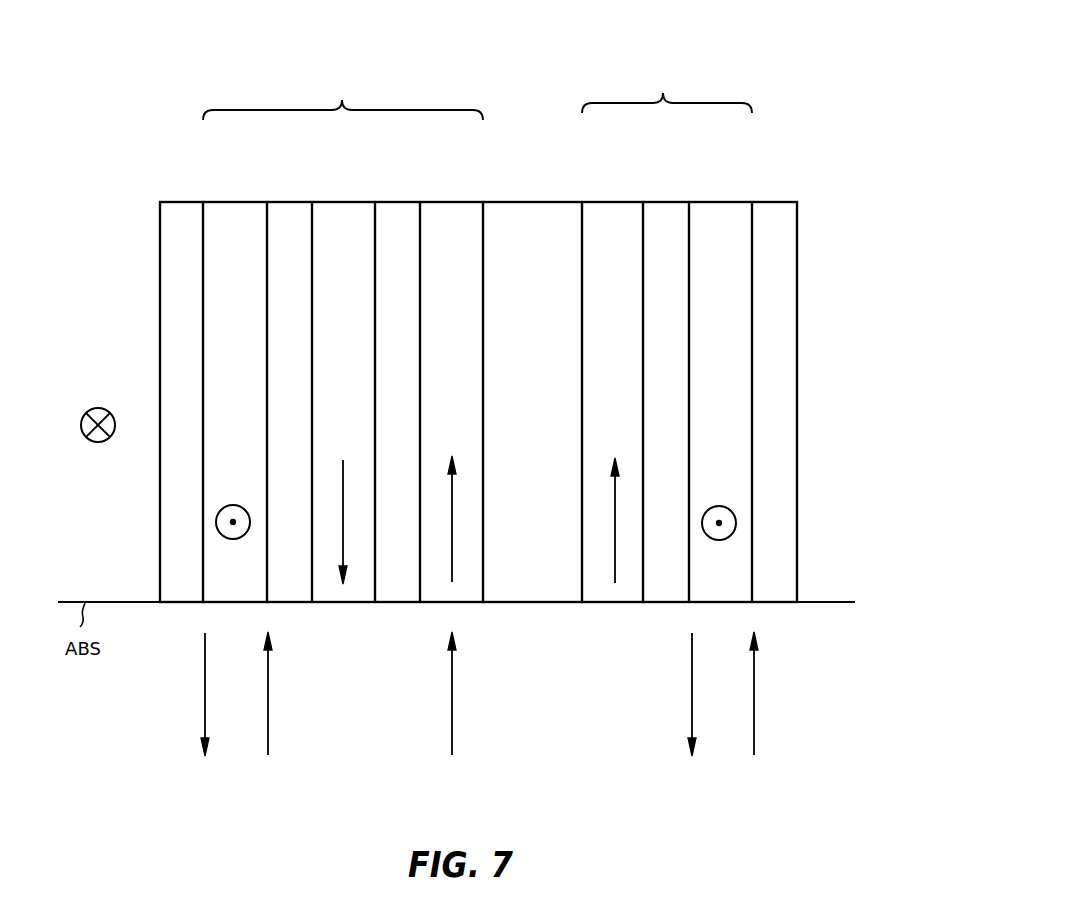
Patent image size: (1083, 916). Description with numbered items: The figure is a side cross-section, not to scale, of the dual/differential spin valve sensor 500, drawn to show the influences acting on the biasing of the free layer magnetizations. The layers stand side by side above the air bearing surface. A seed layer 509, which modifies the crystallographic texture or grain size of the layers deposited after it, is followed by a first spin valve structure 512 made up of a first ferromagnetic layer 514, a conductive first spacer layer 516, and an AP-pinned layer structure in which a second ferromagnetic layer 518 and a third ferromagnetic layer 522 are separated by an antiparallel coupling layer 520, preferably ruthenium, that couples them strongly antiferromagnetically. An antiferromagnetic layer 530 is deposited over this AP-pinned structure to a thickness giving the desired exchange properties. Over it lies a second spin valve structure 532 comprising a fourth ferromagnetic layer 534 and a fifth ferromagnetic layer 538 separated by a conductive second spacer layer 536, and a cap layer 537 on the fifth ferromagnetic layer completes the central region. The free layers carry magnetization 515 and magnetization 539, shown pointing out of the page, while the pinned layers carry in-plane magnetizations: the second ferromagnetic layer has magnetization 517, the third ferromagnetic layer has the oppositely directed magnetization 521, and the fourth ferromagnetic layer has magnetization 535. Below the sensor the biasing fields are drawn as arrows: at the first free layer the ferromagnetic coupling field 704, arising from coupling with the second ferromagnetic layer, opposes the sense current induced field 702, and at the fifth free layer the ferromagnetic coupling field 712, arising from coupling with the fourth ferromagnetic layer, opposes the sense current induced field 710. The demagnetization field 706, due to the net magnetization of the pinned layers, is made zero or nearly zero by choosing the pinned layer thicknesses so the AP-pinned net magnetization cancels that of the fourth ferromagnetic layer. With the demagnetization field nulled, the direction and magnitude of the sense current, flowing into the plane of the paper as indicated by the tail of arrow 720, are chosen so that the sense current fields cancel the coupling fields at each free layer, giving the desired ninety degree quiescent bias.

The dual/differential spin valve sensor 500 is at (848, 86).
The seed layer 509 is at (180, 200).
The first spin valve structure 512 is at (343, 96).
The first ferromagnetic layer (FM1) 514 is at (233, 200).
The magnetization of FM1 layer 515 is at (233, 505).
The first spacer layer 516 is at (285, 200).
The magnetization of FM2 517 is at (344, 481).
The second ferromagnetic layer (FM2) 518 is at (343, 200).
The antiparallel coupling (APC) layer 520 is at (399, 200).
The magnetization of FM3 521 is at (453, 491).
The third ferromagnetic layer (FM3) 522 is at (453, 200).
The antiferromagnetic (AFM) layer 530 is at (530, 200).
The second spin valve structure 532 is at (667, 90).
The fourth ferromagnetic layer (FM4) 534 is at (613, 200).
The magnetization of FM4 535 is at (617, 489).
The second spacer layer 536 is at (671, 200).
The cap layer 537 is at (773, 200).
The fifth ferromagnetic layer (FM5) 538 is at (723, 200).
The magnetization of FM5 layer 539 is at (718, 507).
The sense current induced field HSC1 702 is at (268, 732).
The ferromagnetic coupling field HFC1 704 is at (203, 665).
The demagnetization field HD 706 is at (452, 730).
The sense current induced field HSC5 710 is at (692, 662).
The ferromagnetic coupling field HFC5 712 is at (754, 727).
The sense current arrow 720 is at (100, 407).